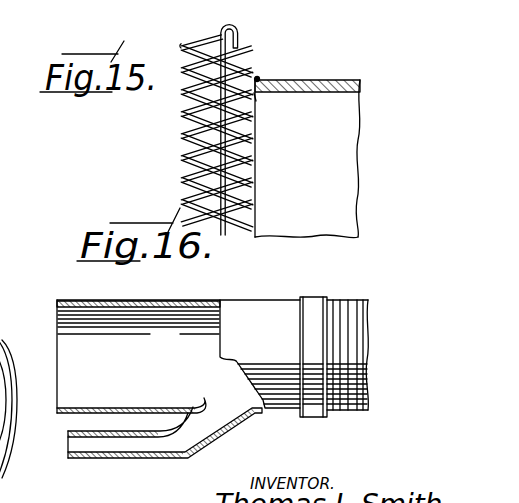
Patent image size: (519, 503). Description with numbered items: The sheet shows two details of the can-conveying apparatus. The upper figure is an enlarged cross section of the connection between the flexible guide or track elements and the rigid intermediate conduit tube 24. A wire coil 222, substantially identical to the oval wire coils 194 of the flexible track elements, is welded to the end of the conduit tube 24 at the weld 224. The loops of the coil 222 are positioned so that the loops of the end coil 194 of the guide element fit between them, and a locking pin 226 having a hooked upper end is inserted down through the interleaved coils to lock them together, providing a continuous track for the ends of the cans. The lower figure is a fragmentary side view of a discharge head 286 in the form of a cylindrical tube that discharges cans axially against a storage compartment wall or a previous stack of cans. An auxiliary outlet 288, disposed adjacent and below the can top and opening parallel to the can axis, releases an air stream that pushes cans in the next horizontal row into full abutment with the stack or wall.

In FIG. 15, the rigid intermediate conduit tube 24 is at (337, 80).
In FIG. 15, the oval wire coil 194 is at (190, 152).
In FIG. 15, the wire coil 222 is at (259, 78).
In FIG. 15, the weld 224 is at (256, 97).
In FIG. 15, the locking pin 226 is at (237, 27).
In FIG. 16, the discharge head 286 is at (185, 300).
In FIG. 16, the auxiliary outlet 288 is at (92, 459).